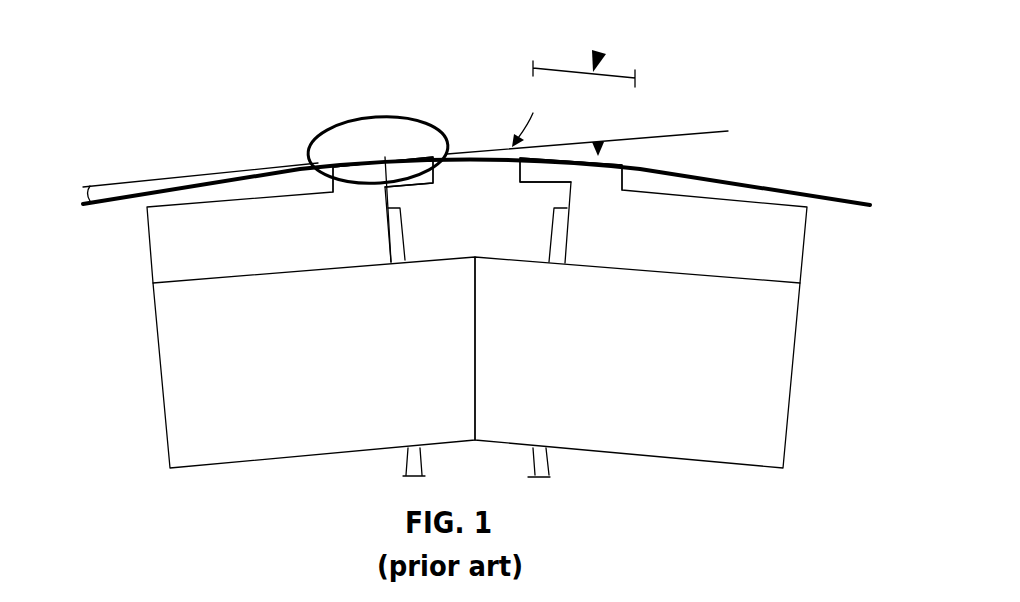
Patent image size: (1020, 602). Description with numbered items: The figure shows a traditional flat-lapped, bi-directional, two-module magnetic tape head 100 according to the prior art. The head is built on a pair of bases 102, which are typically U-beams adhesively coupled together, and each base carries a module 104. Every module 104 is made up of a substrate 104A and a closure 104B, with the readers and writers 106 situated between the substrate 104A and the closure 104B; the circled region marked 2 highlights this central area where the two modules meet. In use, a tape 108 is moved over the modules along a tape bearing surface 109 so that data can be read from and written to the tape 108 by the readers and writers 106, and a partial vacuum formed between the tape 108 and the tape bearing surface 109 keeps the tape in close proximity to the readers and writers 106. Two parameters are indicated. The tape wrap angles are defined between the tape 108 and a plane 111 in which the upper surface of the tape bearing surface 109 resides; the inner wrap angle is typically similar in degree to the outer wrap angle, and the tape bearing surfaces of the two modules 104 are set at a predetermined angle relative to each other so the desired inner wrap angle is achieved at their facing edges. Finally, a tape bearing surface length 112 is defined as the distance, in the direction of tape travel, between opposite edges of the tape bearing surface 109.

The flat-lapped bi-directional two-module magnetic tape head 100 is at (250, 122).
The base 102 is at (158, 350).
The module 104 is at (150, 253).
The substrate 104A is at (212, 226).
The closure 104B is at (517, 176).
The readers and writers 106 is at (385, 146).
The tape 108 is at (802, 190).
The tape bearing surface 109 is at (598, 146).
The plane 111 is at (706, 130).
The tape bearing surface length 112 is at (605, 54).
The detail region shown in FIG. 2 is at (323, 127).